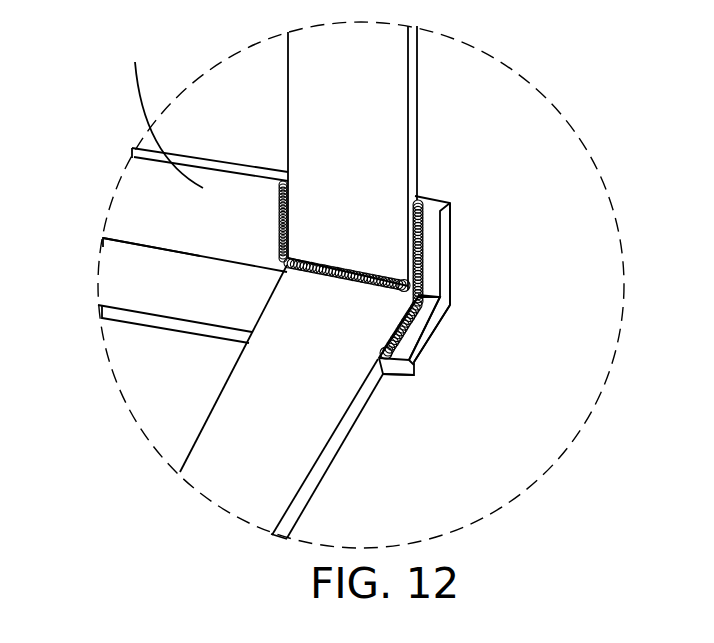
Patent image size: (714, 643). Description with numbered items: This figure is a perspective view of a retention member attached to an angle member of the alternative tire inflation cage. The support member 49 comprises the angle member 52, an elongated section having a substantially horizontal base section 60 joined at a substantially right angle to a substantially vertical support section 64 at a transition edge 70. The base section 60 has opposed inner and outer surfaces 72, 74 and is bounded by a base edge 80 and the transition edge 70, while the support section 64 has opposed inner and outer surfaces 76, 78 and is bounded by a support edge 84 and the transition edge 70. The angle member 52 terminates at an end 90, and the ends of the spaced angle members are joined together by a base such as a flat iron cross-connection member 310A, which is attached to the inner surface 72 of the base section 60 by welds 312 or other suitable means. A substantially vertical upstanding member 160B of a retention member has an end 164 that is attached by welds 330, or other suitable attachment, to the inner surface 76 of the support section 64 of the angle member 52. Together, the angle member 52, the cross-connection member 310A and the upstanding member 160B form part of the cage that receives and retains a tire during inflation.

The support member 49 is at (483, 263).
The angle member 52 is at (463, 303).
The base section 60 is at (182, 325).
The support section 64 is at (155, 200).
The transition edge 70 is at (143, 248).
The inner surface of base section 72 is at (417, 333).
The outer surface of base section 74 is at (418, 368).
The inner surface of support section 76 is at (160, 101).
The outer surface of support section 78 is at (225, 163).
The base edge 80 is at (198, 328).
The support edge 84 is at (198, 162).
The end of angle member 90 is at (450, 220).
The upstanding member 160B is at (390, 118).
The end of upstanding member 164 is at (333, 282).
The cross-connection member 310A is at (303, 430).
The weld 312 is at (280, 292).
The weld 330 is at (280, 236).